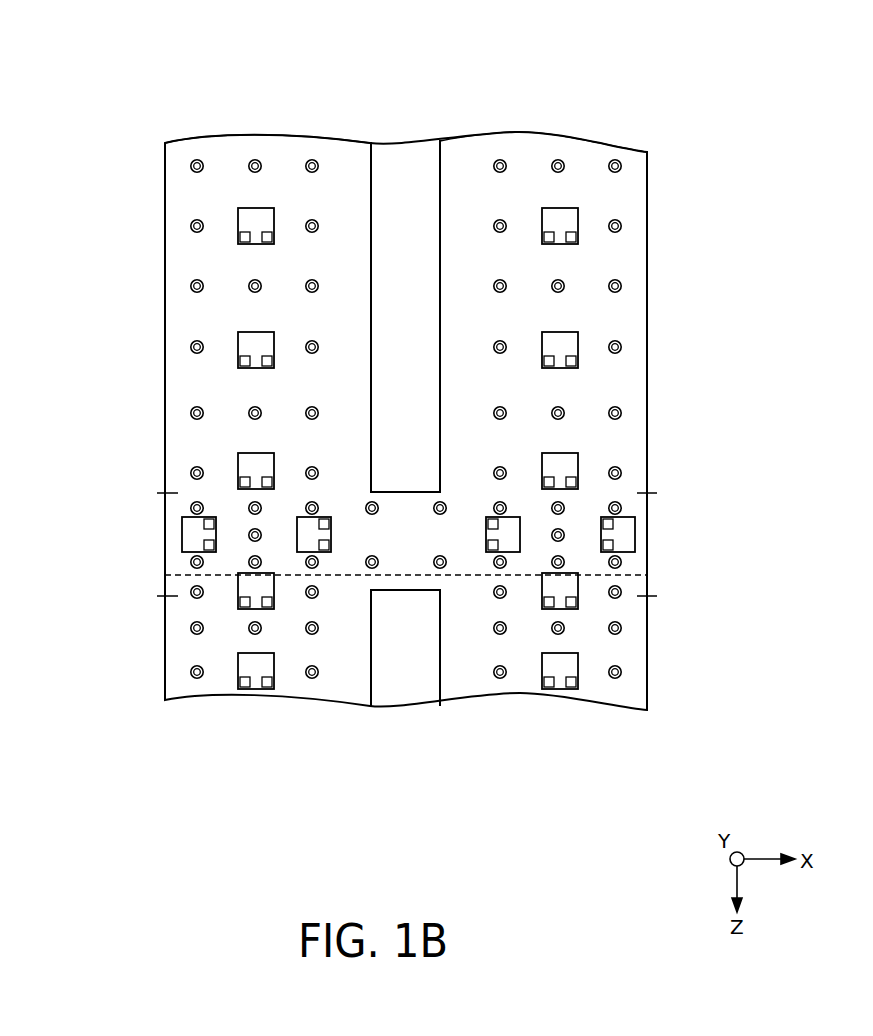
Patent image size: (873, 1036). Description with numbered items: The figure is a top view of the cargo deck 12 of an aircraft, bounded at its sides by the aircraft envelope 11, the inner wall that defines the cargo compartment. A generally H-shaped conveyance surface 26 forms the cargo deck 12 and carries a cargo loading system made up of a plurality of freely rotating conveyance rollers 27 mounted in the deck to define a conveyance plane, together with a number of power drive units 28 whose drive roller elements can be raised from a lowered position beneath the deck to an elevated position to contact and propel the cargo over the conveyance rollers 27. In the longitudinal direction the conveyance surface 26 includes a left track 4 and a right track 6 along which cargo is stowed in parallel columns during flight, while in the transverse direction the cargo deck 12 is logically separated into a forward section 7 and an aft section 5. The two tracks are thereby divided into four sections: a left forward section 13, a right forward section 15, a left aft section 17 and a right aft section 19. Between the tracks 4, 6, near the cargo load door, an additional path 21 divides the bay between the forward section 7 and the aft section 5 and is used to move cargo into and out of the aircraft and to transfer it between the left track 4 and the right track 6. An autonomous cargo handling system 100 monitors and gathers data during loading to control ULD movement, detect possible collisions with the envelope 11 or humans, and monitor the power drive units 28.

The cargo deck 12 is at (100, 76).
The left forward section 13 is at (272, 148).
The H-shaped conveyance surface 26 is at (418, 142).
The right forward section 15 is at (586, 158).
The left track 4 is at (173, 222).
The right track 6 is at (635, 212).
The forward section 7 is at (128, 260).
The aircraft envelope 11 is at (165, 335).
The autonomous cargo handling system 100 is at (180, 381).
The conveyance rollers 27 is at (319, 347).
The power drive unit 28 is at (276, 468).
The additional path 21 is at (165, 538).
The aft section 5 is at (138, 653).
The left aft section 17 is at (345, 685).
The right aft section 19 is at (597, 685).